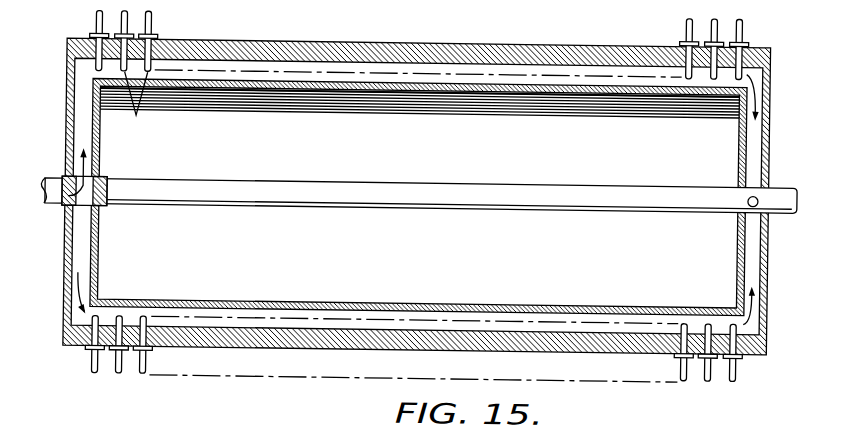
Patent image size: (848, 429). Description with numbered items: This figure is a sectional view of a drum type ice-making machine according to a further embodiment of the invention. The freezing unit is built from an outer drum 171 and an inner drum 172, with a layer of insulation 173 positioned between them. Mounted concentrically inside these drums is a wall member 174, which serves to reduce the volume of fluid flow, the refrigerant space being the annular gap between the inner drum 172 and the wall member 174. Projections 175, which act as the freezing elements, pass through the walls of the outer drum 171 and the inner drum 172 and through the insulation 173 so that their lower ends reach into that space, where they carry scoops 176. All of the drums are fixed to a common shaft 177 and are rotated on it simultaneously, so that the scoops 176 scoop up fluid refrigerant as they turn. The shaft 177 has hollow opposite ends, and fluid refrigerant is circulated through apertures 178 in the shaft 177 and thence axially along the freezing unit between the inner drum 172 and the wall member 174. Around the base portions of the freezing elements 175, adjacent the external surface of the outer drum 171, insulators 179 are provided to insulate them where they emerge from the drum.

The outer drum 171 is at (684, 17).
The inner drum 172 is at (626, 64).
The layer of insulation 173 is at (341, 54).
The wall member 174 is at (413, 88).
The projections 175 is at (94, 28).
The scoops 176 is at (141, 104).
The shaft 177 is at (244, 181).
The apertures 178 is at (80, 212).
The insulators 179 is at (115, 356).